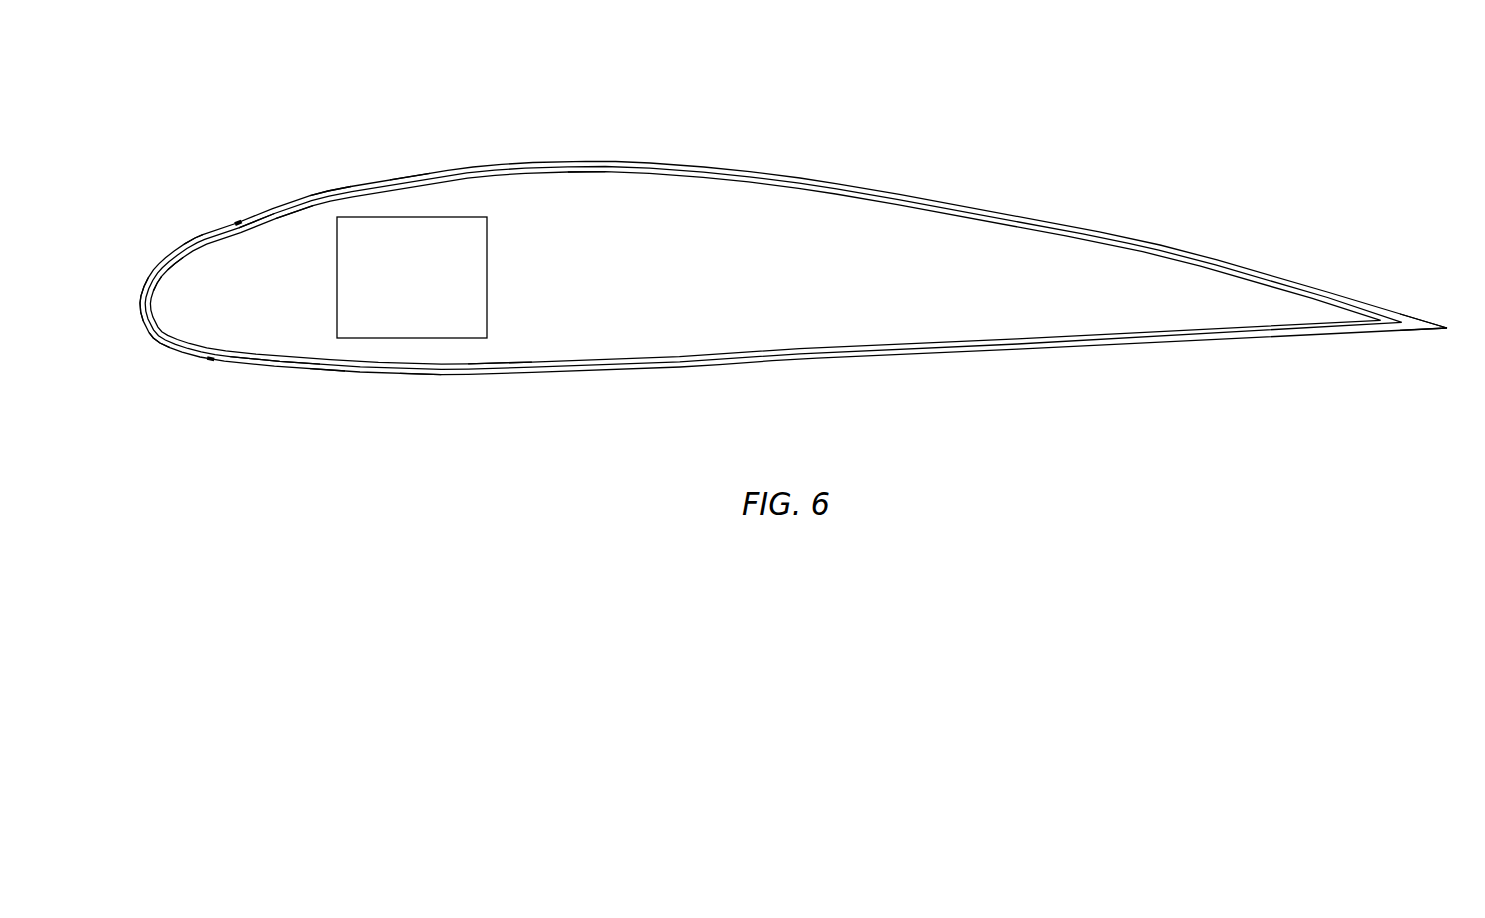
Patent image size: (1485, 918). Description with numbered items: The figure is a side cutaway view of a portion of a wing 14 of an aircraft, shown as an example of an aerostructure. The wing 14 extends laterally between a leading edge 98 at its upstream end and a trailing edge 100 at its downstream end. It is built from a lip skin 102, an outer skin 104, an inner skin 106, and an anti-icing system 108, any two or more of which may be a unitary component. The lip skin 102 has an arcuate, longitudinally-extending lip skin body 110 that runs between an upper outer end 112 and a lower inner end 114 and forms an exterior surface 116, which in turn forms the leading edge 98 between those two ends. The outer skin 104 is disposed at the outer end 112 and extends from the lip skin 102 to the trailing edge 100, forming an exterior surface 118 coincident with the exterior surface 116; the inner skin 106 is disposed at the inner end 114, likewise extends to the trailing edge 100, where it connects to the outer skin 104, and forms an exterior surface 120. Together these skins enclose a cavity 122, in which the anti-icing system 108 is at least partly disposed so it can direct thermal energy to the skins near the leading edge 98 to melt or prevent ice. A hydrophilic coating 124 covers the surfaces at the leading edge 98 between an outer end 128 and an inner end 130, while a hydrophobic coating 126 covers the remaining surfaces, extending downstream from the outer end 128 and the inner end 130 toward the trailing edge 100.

The wing 14 is at (793, 200).
The leading edge 98 is at (141, 303).
The trailing edge 100 is at (1449, 330).
The lip skin 102 is at (196, 270).
The outer skin 104 is at (593, 192).
The inner skin 106 is at (525, 344).
The anti-icing system 108 is at (393, 323).
The lip skin body 110 is at (156, 287).
The outer end 112 is at (328, 190).
The inner end 114 is at (327, 373).
The exterior surface 116 is at (196, 240).
The exterior surface 118 is at (410, 178).
The exterior surface 120 is at (420, 371).
The cavity 122 is at (290, 219).
The hydrophilic coating 124 is at (160, 344).
The hydrophobic coating 126 is at (277, 207).
The outer end 128 is at (240, 219).
The inner end 130 is at (220, 368).